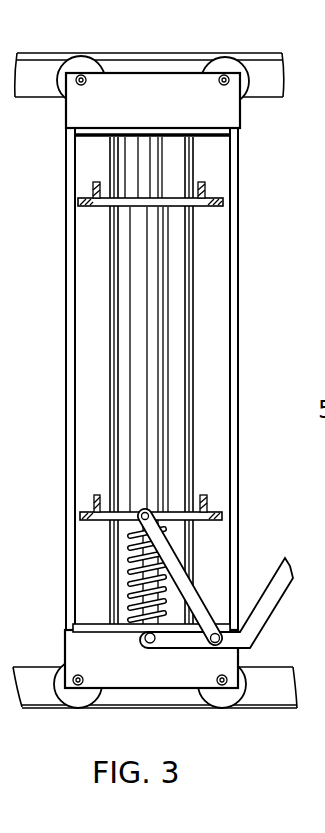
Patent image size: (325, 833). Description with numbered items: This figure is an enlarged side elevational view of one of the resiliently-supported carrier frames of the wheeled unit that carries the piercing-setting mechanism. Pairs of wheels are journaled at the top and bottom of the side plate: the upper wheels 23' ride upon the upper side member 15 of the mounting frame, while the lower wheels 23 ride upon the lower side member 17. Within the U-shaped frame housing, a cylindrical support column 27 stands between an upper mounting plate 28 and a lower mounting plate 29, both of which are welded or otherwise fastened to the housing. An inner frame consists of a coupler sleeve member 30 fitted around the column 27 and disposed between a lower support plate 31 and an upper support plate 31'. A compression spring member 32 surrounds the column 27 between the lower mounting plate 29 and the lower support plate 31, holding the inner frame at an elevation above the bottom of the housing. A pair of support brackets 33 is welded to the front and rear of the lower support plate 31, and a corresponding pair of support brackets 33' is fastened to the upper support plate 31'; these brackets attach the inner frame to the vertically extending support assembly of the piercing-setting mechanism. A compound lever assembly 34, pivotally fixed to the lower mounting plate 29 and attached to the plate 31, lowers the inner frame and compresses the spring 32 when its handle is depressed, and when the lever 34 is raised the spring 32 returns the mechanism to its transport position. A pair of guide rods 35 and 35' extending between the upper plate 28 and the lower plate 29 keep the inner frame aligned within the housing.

The upper side member 15 is at (278, 96).
The lower side member 17 is at (292, 707).
The lower wheels 23 is at (155, 702).
The upper wheels 23' is at (169, 57).
The cylindrical support column 27 is at (158, 153).
The upper mounting plate 28 is at (124, 408).
The lower mounting plate 29 is at (83, 625).
The coupler sleeve member 30 is at (170, 280).
The lower support plate 31 is at (186, 490).
The upper support plate 31' is at (185, 222).
The compression spring member 32 is at (128, 572).
The support brackets 33 is at (156, 503).
The support brackets 33' is at (152, 185).
The compound lever assembly 34 is at (200, 597).
The guide rod 35 is at (208, 380).
The guide rod 35' is at (98, 380).